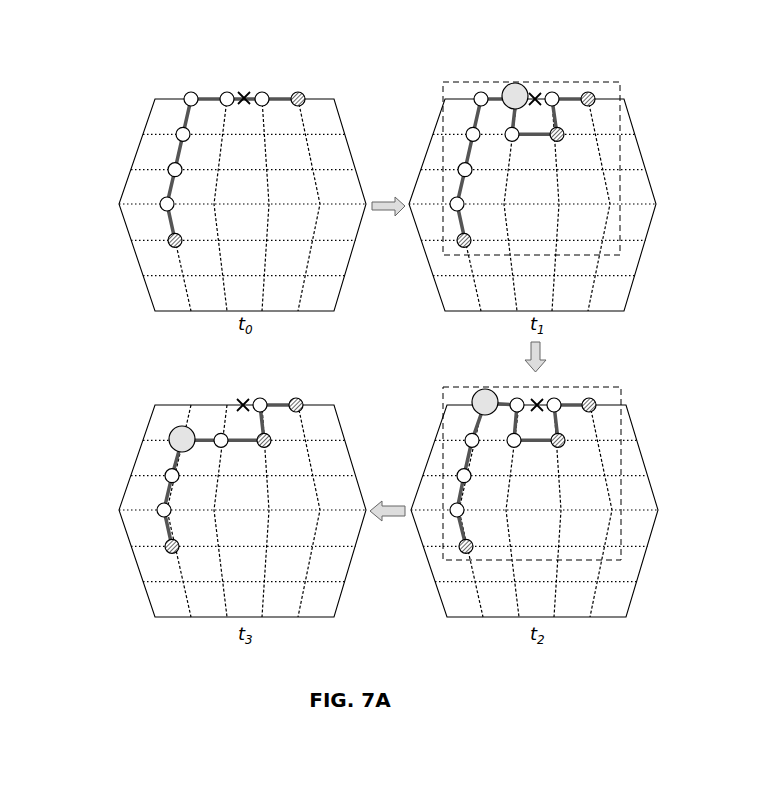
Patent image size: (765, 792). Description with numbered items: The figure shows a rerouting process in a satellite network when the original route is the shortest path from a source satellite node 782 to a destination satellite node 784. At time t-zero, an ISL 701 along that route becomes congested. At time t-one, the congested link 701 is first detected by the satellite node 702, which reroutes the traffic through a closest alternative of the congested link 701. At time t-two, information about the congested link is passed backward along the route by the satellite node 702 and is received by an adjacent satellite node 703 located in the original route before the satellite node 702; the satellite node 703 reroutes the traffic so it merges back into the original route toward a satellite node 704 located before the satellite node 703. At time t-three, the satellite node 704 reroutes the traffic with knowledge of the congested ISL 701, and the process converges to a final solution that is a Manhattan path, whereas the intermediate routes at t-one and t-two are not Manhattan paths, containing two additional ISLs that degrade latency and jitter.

The congested ISL 701 is at (243, 92).
The destination satellite node 784 is at (297, 92).
The source satellite node 782 is at (172, 238).
The satellite node 702 is at (508, 83).
The adjacent satellite node 703 is at (475, 391).
The satellite node 704 is at (176, 427).